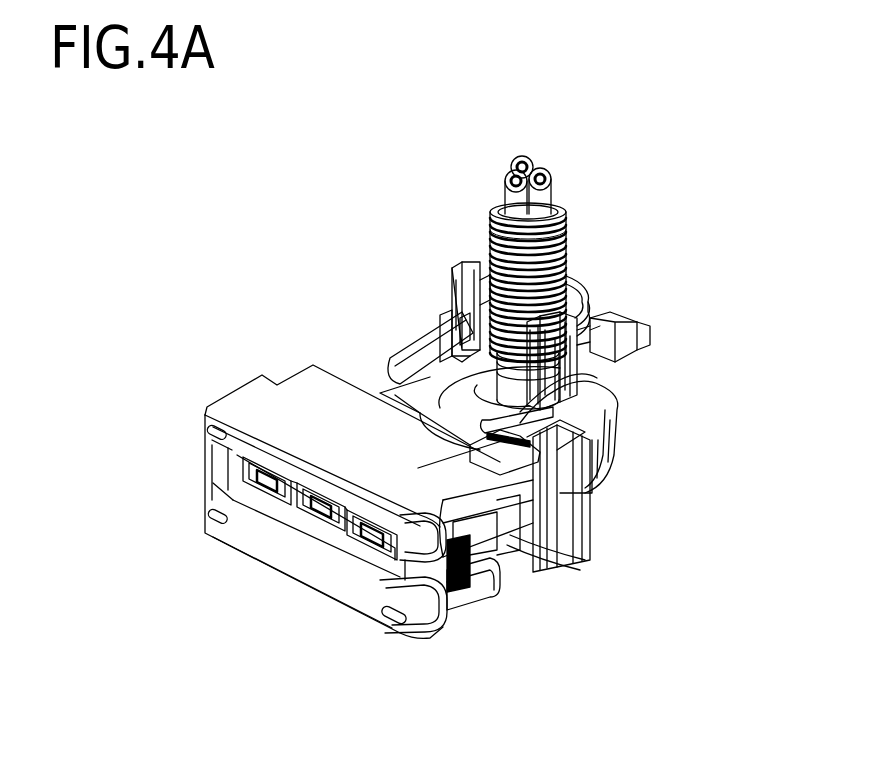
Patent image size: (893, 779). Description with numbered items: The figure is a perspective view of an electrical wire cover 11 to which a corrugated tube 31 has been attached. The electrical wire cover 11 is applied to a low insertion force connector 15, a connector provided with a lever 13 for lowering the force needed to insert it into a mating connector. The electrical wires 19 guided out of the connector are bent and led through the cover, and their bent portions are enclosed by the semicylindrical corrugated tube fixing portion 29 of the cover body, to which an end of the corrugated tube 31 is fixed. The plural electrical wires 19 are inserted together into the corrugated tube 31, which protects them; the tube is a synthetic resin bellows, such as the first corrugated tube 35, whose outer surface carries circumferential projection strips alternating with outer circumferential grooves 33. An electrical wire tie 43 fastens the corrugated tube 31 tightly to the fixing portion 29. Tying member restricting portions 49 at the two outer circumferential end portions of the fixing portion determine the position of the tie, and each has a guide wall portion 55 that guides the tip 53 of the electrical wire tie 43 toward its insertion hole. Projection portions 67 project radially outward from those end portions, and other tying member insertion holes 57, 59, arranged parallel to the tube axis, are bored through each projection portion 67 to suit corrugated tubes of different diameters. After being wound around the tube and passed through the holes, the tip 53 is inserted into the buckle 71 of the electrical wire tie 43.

The electrical wire cover 11 is at (660, 446).
The lever 13 is at (583, 510).
The low insertion force connector 15 is at (232, 371).
The electrical wire 19 is at (508, 172).
The corrugated tube fixing portion 29 is at (603, 284).
The corrugated tube 31 is at (574, 203).
The outer circumferential groove 33 is at (490, 243).
The first corrugated tube 35 is at (574, 232).
The electrical wire tie 43 is at (653, 308).
The tying member restricting portion 49 is at (430, 315).
The tip 53 is at (632, 328).
The guide wall portion 55 is at (470, 330).
The tying member insertion hole 57 is at (553, 356).
The tying member insertion hole 59 is at (598, 427).
The projection portion 67 is at (455, 273).
The buckle 71 is at (609, 322).